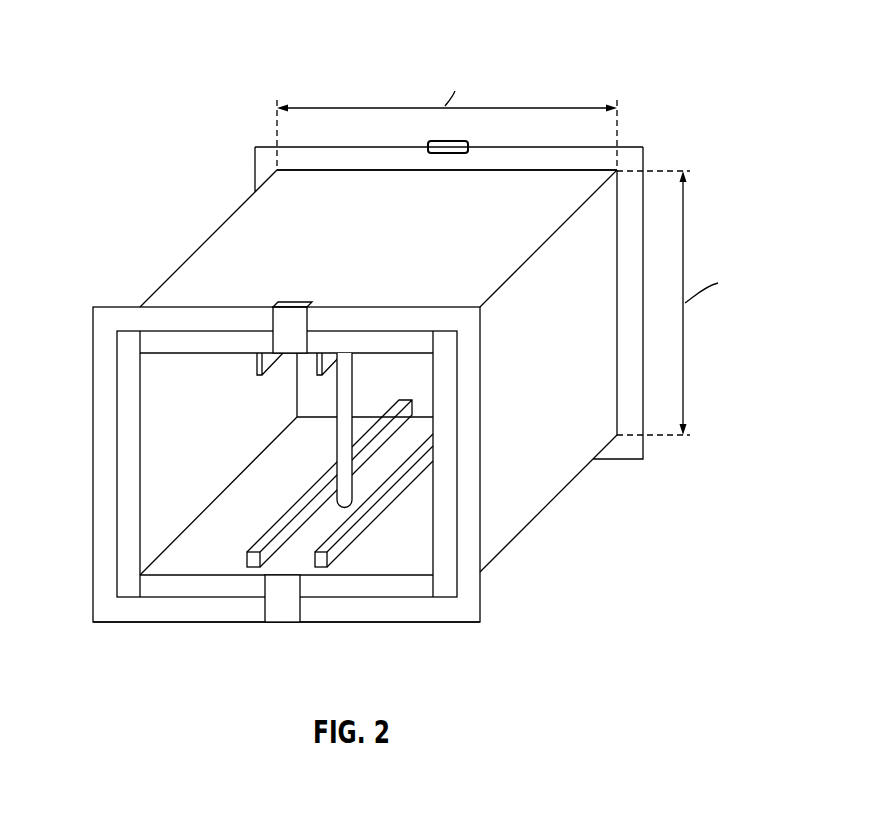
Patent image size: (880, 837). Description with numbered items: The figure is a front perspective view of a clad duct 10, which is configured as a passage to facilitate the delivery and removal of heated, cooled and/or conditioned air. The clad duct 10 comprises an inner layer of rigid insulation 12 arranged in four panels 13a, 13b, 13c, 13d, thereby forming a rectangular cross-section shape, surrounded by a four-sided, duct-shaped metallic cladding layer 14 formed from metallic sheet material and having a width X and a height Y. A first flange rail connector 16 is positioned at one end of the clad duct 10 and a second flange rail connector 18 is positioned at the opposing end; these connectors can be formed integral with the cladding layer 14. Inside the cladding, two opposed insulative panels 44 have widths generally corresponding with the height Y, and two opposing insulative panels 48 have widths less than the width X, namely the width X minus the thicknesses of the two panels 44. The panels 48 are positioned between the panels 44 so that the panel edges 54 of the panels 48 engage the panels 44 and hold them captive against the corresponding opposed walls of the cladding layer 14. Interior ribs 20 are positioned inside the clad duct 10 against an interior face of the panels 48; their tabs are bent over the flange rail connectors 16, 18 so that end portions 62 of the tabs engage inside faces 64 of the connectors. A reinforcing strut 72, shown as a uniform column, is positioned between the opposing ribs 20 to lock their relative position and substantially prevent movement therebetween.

The clad duct 10 is at (690, 26).
The inner layer of rigid insulation 12 is at (127, 493).
The panel 13a is at (413, 587).
The panel 13b is at (448, 542).
The panel 13c is at (163, 342).
The panel 13d is at (127, 453).
The metallic cladding layer 14 is at (248, 242).
The first flange rail connector 16 is at (183, 622).
The second flange rail connector 18 is at (624, 148).
The interior rib 20 is at (328, 360).
The opposed insulative panel 44 is at (127, 535).
The opposing insulative panel 48 is at (268, 342).
The panel edge 54 is at (137, 343).
The end portion 62 is at (448, 155).
The inside face 64 is at (532, 157).
The reinforcing strut 72 is at (355, 393).